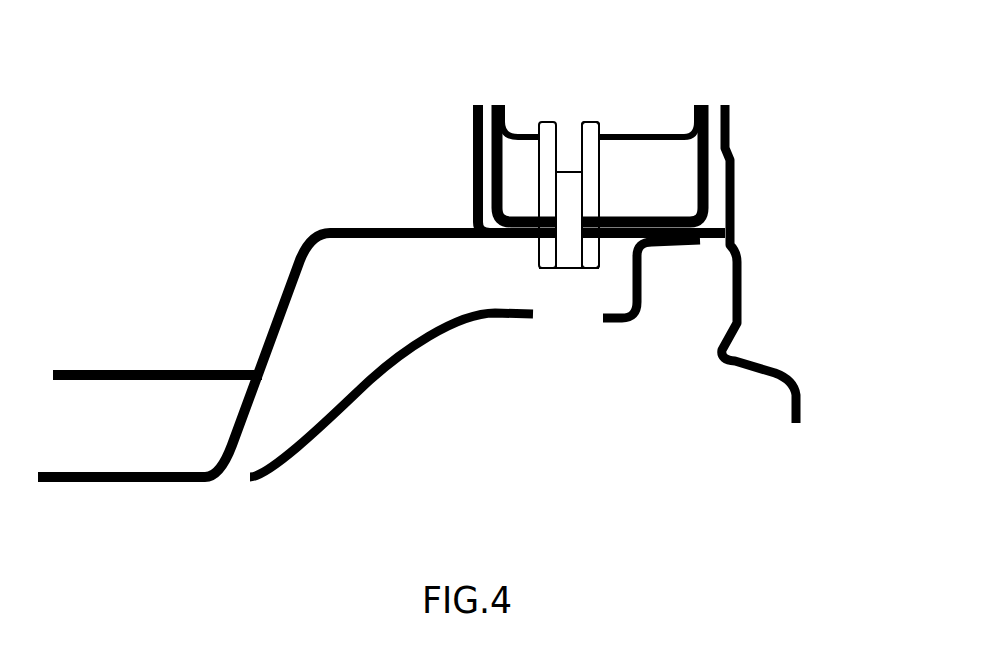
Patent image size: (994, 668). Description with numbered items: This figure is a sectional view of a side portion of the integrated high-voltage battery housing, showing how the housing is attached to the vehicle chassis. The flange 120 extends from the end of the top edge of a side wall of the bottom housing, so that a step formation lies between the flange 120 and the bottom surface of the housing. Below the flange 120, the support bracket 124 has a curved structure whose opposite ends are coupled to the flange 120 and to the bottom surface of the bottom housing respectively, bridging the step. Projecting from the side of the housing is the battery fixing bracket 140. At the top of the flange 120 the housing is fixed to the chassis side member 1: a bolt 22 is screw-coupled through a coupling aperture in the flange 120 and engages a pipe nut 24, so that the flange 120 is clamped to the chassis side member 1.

The chassis side member 1 is at (738, 260).
The bolt 22 is at (562, 255).
The pipe nut 24 is at (590, 127).
The flange 120 is at (390, 233).
The support bracket 124 is at (380, 393).
The battery fixing bracket 140 is at (123, 370).